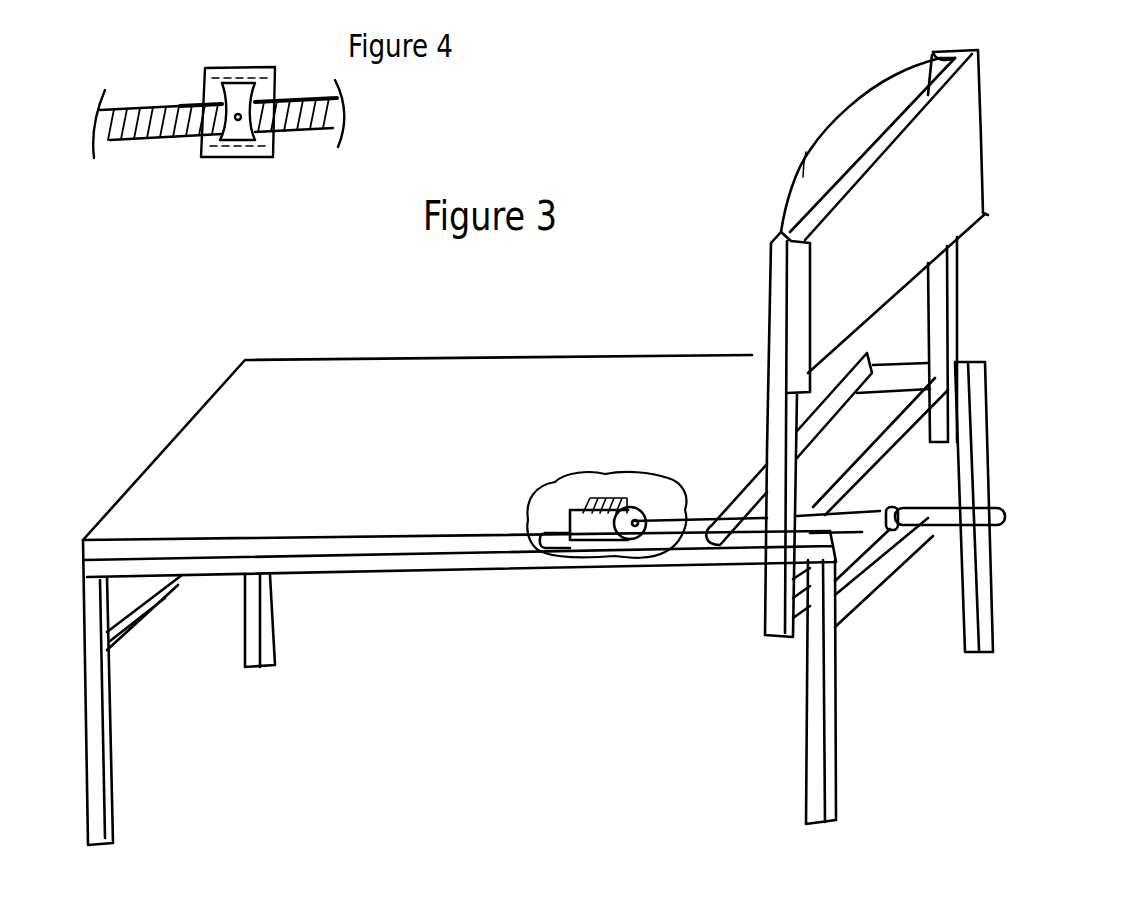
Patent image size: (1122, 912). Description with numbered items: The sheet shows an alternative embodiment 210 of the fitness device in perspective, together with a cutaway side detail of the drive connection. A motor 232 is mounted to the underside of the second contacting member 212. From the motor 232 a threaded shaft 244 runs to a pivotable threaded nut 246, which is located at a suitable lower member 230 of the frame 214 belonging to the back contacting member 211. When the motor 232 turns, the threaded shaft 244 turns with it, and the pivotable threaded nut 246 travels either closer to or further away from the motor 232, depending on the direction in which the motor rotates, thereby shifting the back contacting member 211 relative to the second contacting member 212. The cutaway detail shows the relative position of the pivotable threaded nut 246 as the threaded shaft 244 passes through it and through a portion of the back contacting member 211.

In FIG. 3, the alternative embodiment of the fitness device 210 is at (642, 240).
In FIG. 3, the back contacting member 211 is at (938, 188).
In FIG. 3, the second contacting member 212 is at (458, 381).
In FIG. 3, the frame 214 is at (777, 377).
In FIG. 3, the lower member 230 is at (1000, 524).
In FIG. 4, the lower member 230 is at (220, 67).
In FIG. 3, the motor 232 is at (580, 545).
In FIG. 3, the threaded shaft 244 is at (703, 538).
In FIG. 4, the threaded shaft 244 is at (147, 103).
In FIG. 4, the pivotable threaded nut 246 is at (250, 72).